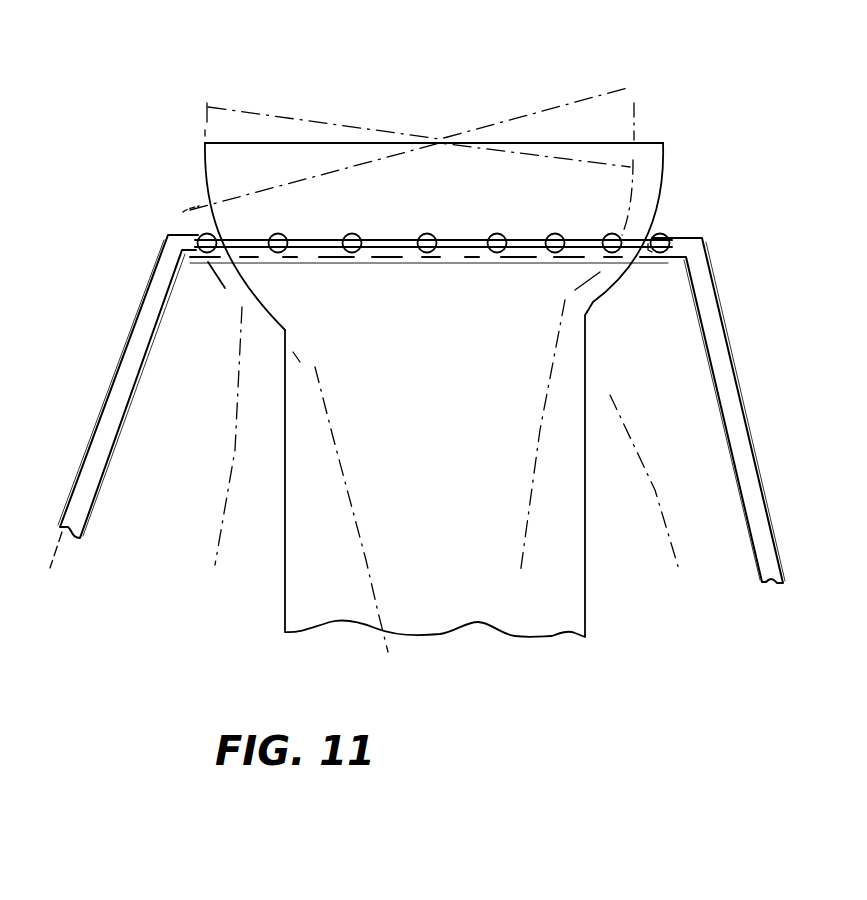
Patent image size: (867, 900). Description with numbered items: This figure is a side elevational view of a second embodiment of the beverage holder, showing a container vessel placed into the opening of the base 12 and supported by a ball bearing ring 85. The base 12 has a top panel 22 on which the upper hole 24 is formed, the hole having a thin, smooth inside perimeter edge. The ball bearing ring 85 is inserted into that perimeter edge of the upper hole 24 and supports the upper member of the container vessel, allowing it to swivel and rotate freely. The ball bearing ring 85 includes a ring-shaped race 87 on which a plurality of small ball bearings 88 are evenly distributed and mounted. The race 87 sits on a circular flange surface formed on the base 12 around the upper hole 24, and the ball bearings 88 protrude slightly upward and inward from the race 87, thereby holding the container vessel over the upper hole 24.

The base 12 is at (138, 258).
The top panel 22 is at (184, 234).
The upper hole 24 is at (641, 245).
The ball bearing ring 85 is at (658, 238).
The ring-shaped race 87 is at (462, 239).
The ball bearings 88 is at (418, 236).